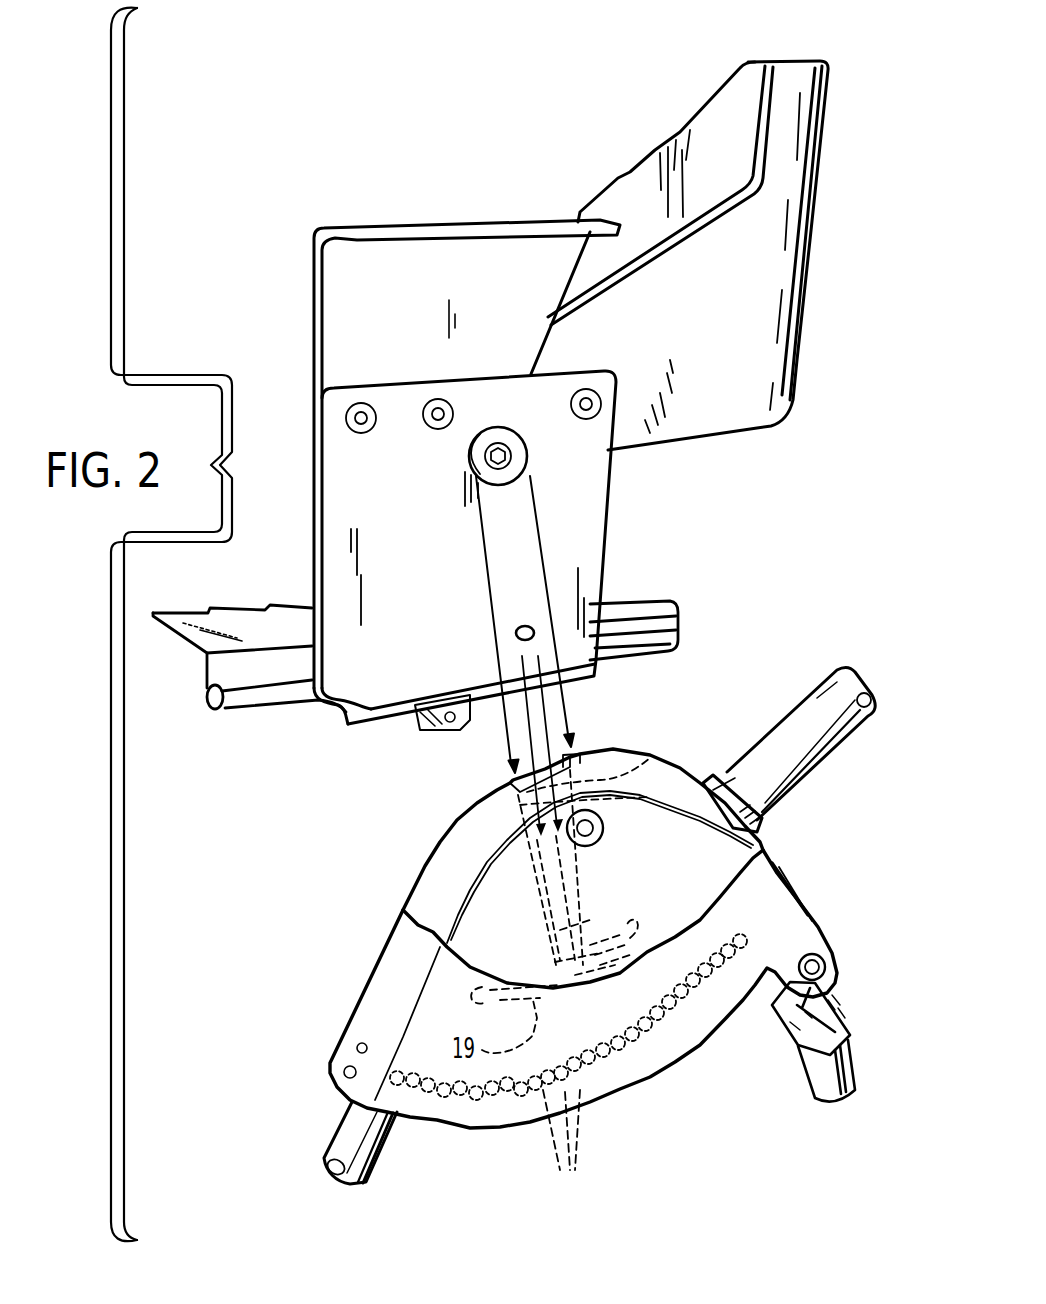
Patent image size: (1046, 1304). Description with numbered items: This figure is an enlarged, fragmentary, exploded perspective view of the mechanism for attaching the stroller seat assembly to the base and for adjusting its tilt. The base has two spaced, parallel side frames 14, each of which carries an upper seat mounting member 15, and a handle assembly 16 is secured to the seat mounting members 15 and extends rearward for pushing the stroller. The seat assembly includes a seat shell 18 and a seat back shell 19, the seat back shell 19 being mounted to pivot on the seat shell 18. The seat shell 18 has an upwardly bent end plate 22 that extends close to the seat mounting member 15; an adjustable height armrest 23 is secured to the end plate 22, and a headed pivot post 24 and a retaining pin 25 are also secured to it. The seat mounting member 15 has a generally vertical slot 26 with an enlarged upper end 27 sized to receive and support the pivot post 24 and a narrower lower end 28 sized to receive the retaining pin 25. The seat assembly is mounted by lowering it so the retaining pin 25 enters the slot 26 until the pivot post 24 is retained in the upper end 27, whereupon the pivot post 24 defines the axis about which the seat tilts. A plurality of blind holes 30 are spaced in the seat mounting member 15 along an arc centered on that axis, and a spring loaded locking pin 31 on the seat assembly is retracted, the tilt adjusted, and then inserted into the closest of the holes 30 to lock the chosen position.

The side frame 14 is at (337, 1136).
The seat mounting member 15 is at (377, 963).
The handle assembly 16 is at (857, 735).
The seat shell 18 is at (187, 646).
The seat back shell 19 is at (803, 327).
The end plate 22 is at (617, 531).
The adjustable height armrest 23 is at (405, 222).
The headed pivot post 24 is at (532, 452).
The retaining pin 25 is at (528, 629).
The vertical slot 26 is at (585, 890).
The enlarged upper end 27 is at (650, 758).
The narrower lower end 28 is at (580, 923).
The blind holes 30 is at (568, 1073).
The spring loaded locking pin 31 is at (459, 729).